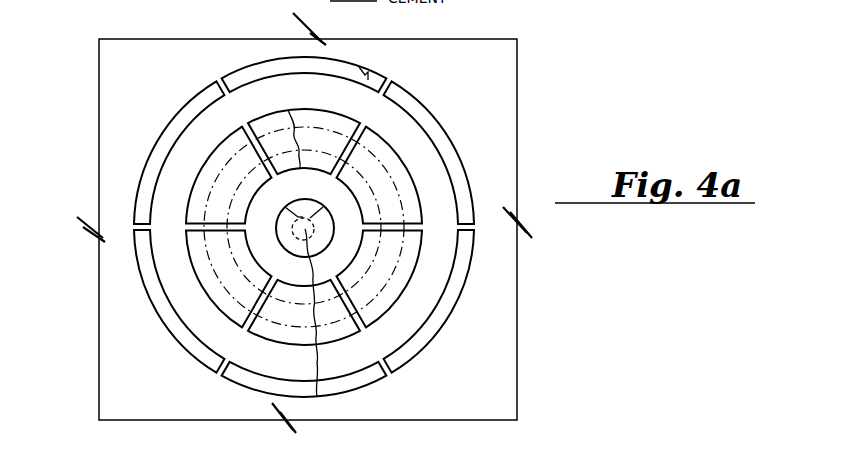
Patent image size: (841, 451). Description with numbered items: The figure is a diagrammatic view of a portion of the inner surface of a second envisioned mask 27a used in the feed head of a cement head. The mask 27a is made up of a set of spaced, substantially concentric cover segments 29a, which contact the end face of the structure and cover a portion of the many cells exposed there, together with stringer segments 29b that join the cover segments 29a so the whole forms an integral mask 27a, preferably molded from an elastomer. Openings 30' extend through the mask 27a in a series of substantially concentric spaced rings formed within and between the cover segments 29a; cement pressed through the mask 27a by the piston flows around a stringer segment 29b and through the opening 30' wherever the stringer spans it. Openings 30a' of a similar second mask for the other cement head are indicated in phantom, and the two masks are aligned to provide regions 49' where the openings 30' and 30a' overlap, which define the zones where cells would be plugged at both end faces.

The mask 27a is at (98, 101).
The cover segments 29a is at (423, 167).
The stringer segments 29b is at (192, 233).
The openings 30' is at (347, 134).
The openings of second mask 30a' is at (361, 320).
The overlap regions 49' is at (306, 223).